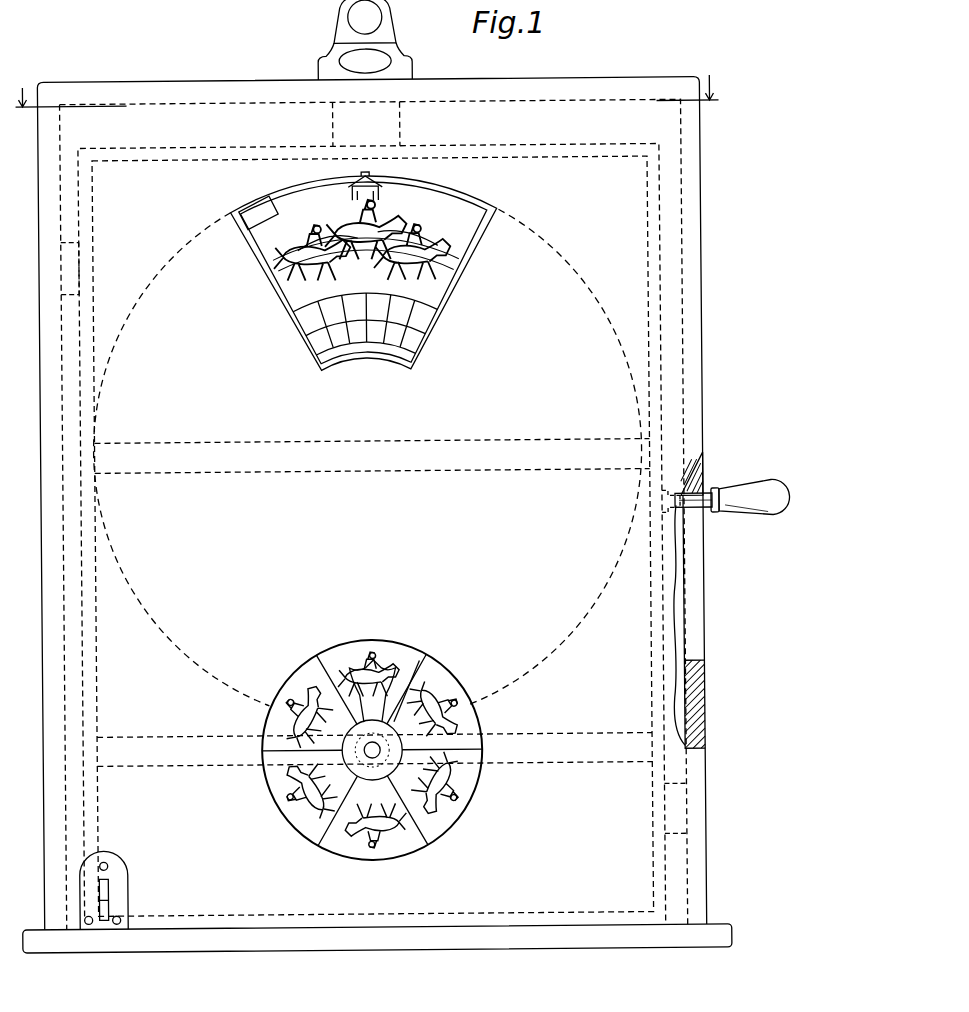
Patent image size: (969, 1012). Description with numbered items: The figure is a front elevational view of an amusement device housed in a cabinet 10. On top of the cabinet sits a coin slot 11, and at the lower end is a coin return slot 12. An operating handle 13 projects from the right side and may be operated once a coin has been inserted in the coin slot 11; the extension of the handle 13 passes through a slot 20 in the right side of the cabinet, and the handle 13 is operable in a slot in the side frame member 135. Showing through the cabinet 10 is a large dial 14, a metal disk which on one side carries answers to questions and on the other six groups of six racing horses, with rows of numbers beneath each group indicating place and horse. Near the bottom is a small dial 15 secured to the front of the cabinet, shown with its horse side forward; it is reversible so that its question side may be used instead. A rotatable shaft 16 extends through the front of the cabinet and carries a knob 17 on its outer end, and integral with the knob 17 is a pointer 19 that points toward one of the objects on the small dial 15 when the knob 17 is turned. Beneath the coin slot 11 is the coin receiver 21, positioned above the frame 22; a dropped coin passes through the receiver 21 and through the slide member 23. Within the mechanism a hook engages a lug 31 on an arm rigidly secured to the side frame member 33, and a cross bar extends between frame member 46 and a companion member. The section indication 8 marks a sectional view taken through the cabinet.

The section line 8 is at (372, 101).
The cabinet 10 is at (148, 80).
The coin slot 11 is at (352, 17).
The coin return slot 12 is at (104, 904).
The operating handle 13 is at (774, 506).
The large dial 14 is at (523, 212).
The small dial 15 is at (284, 674).
The rotatable shaft 16 is at (388, 753).
The knob 17 is at (430, 690).
The pointer 19 is at (385, 728).
The slot 20 is at (697, 633).
The coin receiver 21 is at (403, 125).
The frame 22 is at (565, 145).
The slide member 23 is at (280, 212).
The lug 31 is at (368, 457).
The side frame member 33 is at (81, 560).
The frame member 46 is at (586, 764).
The side frame member 135 is at (668, 575).